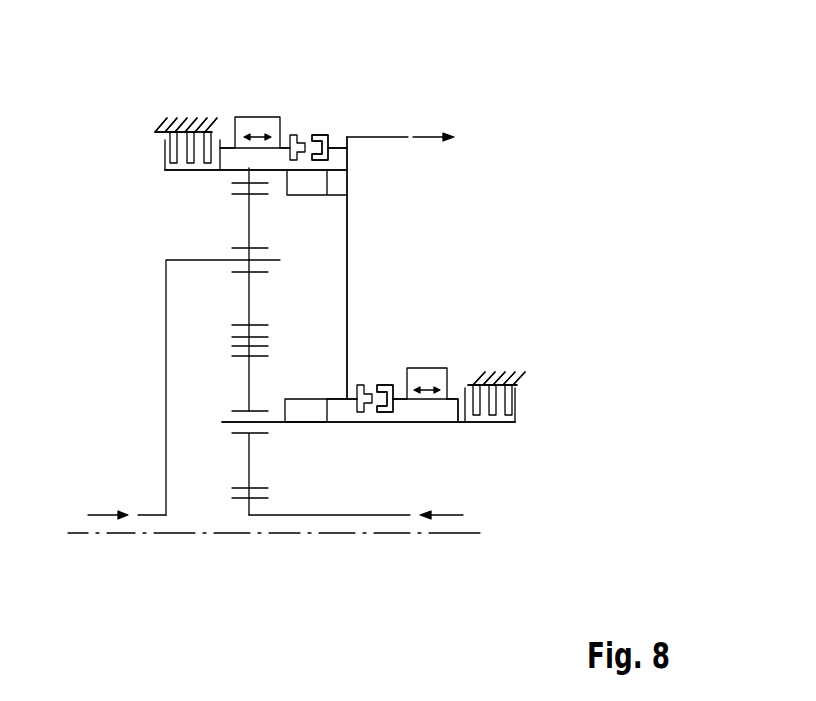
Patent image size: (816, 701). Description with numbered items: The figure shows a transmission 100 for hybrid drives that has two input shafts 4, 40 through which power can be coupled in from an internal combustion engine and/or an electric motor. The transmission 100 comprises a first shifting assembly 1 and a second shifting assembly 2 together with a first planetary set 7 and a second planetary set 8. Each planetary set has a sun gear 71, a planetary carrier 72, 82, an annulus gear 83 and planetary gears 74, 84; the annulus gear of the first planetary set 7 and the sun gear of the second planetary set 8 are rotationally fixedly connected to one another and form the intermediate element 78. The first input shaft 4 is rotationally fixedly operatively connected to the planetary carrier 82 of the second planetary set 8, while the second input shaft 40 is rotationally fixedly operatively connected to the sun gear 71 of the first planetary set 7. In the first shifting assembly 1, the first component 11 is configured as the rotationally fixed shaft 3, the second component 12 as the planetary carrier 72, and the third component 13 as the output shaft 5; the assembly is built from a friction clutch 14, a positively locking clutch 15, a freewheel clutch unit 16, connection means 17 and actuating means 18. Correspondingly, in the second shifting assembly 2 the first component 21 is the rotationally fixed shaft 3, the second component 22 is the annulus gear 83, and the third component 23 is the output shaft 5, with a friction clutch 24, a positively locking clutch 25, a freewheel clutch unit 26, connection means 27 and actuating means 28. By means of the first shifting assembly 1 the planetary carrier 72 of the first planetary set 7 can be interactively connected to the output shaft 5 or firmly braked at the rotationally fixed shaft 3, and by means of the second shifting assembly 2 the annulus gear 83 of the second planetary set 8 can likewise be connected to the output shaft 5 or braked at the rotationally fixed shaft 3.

The transmission 100 is at (552, 125).
The first shifting assembly 1 is at (521, 349).
The second shifting assembly 2 is at (315, 105).
The rotationally fixed shaft 3 is at (180, 115).
The first input shaft 4 is at (148, 516).
The output shaft 5 is at (377, 137).
The first planetary set 7 is at (208, 412).
The second planetary set 8 is at (226, 218).
The first component 11 is at (517, 377).
The second component 12 is at (375, 424).
The third component 13 is at (348, 258).
The friction clutch 14 is at (525, 403).
The positively locking clutch 15 is at (374, 376).
The freewheel clutch unit 16 is at (318, 416).
The connection means 17 is at (397, 402).
The actuating means 18 is at (437, 380).
The first component 21 is at (180, 115).
The second component 22 is at (223, 171).
The third component 23 is at (348, 258).
The friction clutch 24 is at (152, 146).
The positively locking clutch 25 is at (300, 124).
The freewheel clutch unit 26 is at (322, 190).
The connection means 27 is at (288, 133).
The actuating means 28 is at (242, 118).
The second input shaft 40 is at (313, 516).
The sun gear 71 is at (249, 512).
The planetary carrier 72 is at (375, 424).
The planetary gear 74 is at (249, 470).
The intermediate element 78 is at (245, 340).
The planetary carrier 82 is at (198, 258).
The annulus gear 83 is at (223, 171).
The planetary gear 84 is at (249, 308).